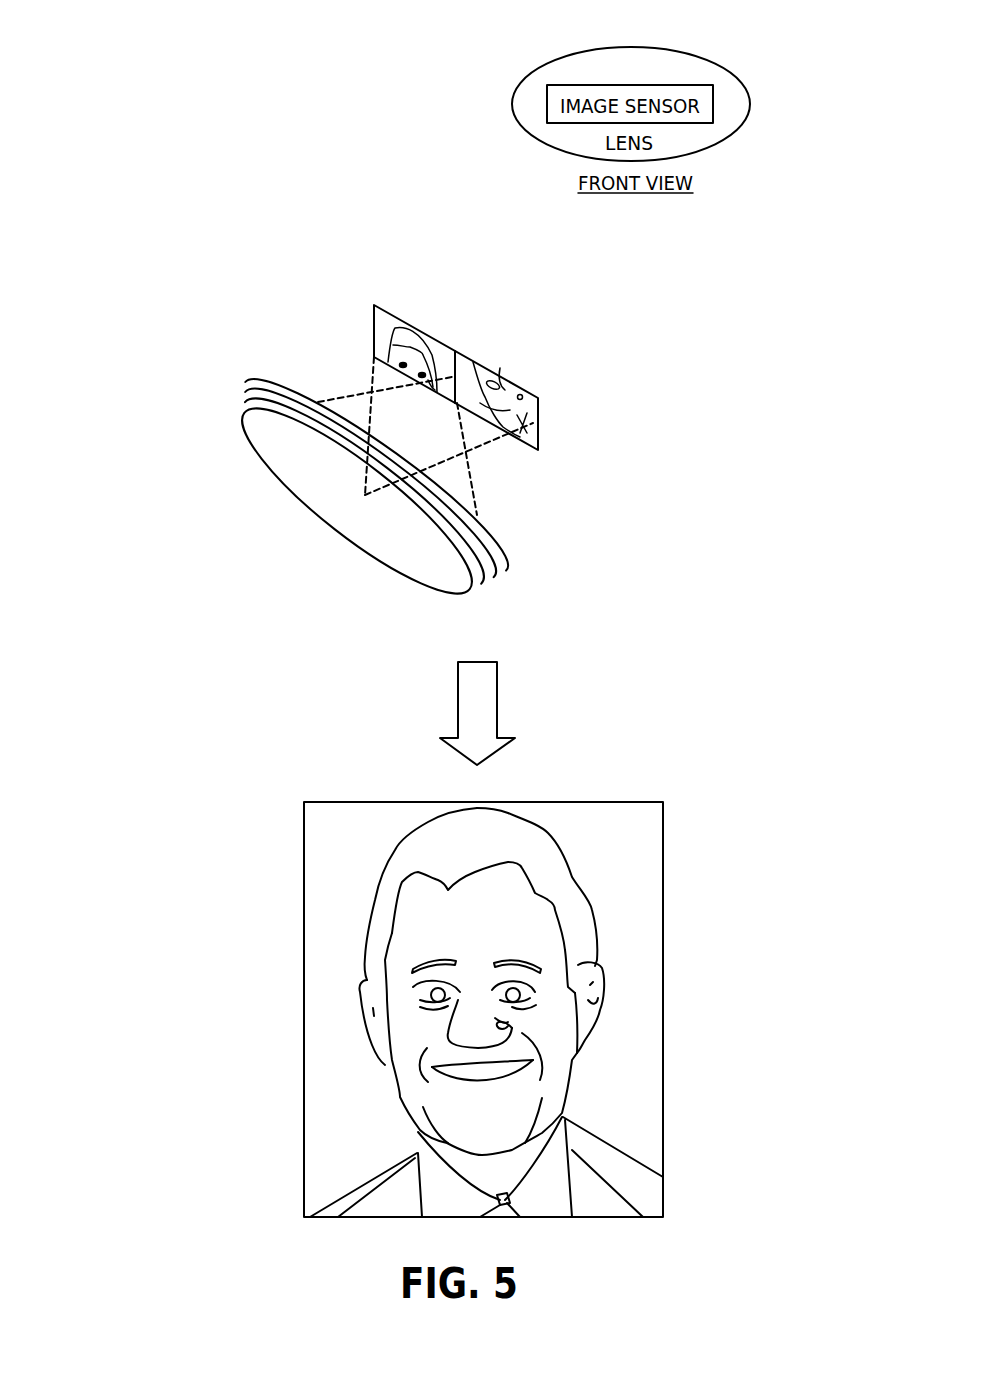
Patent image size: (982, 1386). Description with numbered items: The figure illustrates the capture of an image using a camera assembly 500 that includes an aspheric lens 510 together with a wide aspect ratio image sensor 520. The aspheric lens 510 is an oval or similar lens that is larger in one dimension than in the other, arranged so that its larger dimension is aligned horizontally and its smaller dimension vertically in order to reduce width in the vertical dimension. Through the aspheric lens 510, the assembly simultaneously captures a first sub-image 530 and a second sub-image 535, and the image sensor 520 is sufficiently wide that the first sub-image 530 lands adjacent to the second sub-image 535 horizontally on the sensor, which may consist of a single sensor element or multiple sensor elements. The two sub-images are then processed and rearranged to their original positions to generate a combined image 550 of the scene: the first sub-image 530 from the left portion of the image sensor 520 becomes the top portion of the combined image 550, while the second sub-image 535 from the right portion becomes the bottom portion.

The camera assembly 500 is at (197, 148).
The aspheric lens 510 is at (517, 73).
The wide aspect ratio image sensor 520 is at (773, 53).
The first sub-image 530 is at (368, 313).
The second sub-image 535 is at (549, 424).
The combined image 550 is at (290, 818).